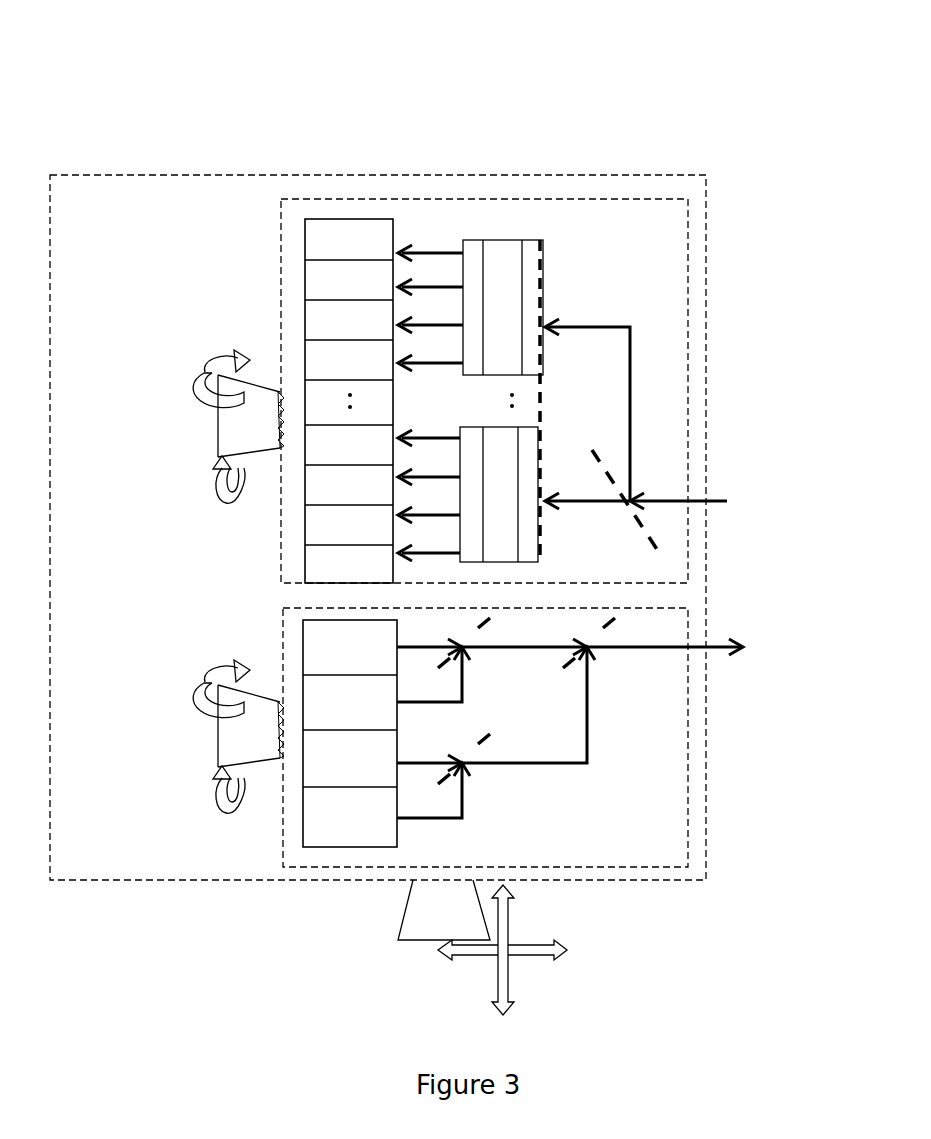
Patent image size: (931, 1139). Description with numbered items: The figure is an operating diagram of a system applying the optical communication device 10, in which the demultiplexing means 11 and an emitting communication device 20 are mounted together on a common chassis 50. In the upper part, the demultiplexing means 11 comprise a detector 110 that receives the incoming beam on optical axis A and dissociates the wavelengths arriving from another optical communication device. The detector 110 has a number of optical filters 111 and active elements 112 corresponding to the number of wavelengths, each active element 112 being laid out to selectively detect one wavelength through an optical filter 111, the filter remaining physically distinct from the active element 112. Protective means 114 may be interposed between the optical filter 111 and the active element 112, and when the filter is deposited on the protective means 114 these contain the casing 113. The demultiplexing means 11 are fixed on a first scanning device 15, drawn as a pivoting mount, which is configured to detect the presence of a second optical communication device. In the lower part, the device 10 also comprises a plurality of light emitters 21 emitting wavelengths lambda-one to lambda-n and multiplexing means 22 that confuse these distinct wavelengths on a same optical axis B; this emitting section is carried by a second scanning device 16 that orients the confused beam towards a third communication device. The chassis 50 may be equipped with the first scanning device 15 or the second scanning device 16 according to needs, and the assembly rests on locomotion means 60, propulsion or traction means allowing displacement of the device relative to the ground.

The optical communication device 10 is at (458, 312).
The demultiplexing means 11 is at (458, 312).
The detector 110 is at (604, 185).
The optical filter 111 is at (539, 460).
The active element 112 is at (463, 252).
The casing 113 is at (490, 437).
The protective means 114 is at (495, 363).
The first scanning device 15 is at (237, 432).
The second scanning device 16 is at (242, 737).
The second optical communication device 20 is at (432, 794).
The multiplexing means 22 is at (327, 880).
The light emitters 21 is at (312, 693).
The common chassis 50 is at (205, 880).
The locomotion means 60 is at (419, 930).